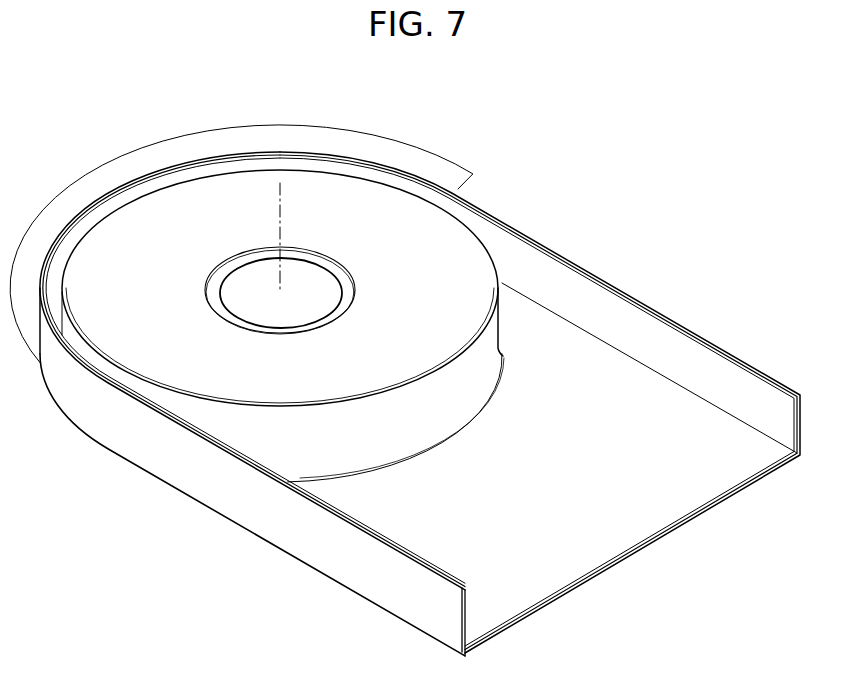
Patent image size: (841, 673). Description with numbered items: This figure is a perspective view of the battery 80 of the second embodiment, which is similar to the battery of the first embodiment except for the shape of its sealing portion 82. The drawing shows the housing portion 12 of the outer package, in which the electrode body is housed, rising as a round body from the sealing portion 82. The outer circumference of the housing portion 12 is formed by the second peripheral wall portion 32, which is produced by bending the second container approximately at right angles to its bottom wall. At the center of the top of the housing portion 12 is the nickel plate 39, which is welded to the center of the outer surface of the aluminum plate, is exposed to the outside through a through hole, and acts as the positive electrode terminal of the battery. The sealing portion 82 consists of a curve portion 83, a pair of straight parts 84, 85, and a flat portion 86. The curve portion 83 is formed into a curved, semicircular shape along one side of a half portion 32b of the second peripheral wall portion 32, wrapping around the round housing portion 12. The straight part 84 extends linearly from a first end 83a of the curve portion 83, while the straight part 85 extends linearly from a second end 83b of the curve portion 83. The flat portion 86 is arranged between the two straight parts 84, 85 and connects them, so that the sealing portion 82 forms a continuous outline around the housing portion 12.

The battery 80 is at (405, 360).
The sealing portion 82 is at (176, 470).
The curve portion 83 is at (415, 358).
The first end 83a is at (93, 417).
The second end 83b is at (448, 208).
The straight part 84 is at (280, 527).
The straight part 85 is at (718, 378).
The flat portion 86 is at (586, 529).
The housing portion 12 is at (356, 347).
The second peripheral wall portion 32 is at (440, 405).
The half portion 32b is at (97, 165).
The nickel plate 39 is at (287, 303).